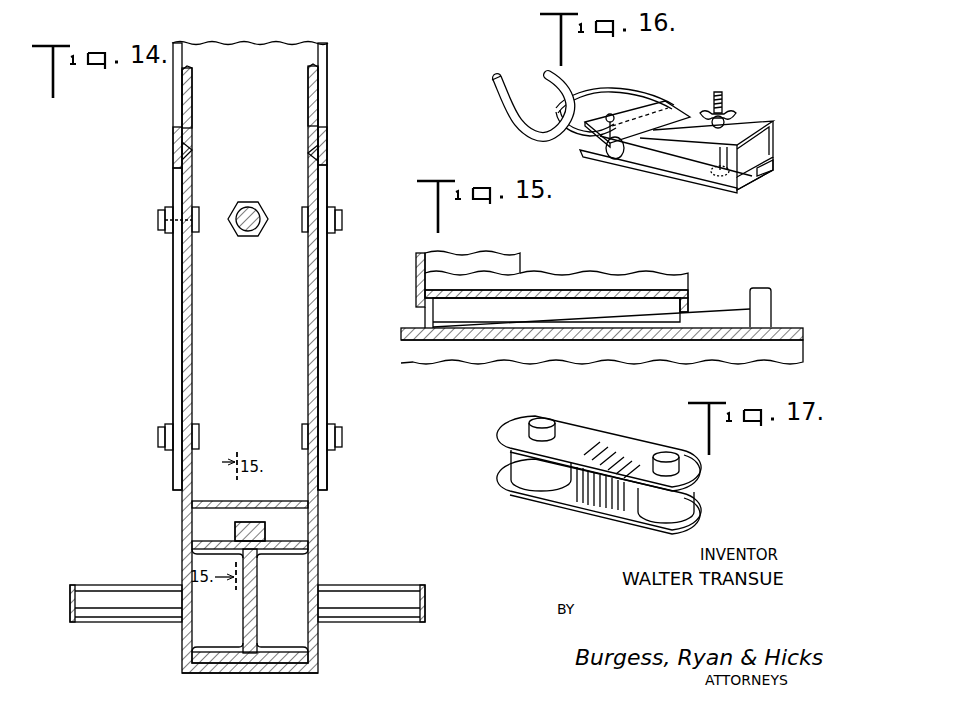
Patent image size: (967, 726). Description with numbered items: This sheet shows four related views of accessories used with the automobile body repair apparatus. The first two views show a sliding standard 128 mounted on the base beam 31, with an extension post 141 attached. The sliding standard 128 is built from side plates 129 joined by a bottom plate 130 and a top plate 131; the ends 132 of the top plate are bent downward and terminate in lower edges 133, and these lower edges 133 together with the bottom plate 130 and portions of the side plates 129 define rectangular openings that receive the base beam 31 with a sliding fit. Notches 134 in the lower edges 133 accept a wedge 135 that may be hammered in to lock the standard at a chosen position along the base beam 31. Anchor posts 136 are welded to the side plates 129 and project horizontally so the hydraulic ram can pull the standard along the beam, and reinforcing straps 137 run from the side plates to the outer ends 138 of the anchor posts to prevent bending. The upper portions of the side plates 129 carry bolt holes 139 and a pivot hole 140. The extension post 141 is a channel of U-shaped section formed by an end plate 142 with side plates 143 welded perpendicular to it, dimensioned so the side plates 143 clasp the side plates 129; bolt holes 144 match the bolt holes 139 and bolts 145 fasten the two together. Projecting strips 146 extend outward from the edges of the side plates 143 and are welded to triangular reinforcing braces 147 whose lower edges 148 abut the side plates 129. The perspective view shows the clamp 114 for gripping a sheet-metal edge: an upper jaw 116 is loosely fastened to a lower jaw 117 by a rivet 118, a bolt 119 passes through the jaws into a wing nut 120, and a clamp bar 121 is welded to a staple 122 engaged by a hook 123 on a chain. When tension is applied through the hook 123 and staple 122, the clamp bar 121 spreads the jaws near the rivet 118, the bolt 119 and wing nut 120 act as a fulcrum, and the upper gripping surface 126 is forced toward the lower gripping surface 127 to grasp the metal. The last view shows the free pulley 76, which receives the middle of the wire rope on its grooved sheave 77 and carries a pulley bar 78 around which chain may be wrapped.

In FIG. 14, the base beam 31 is at (282, 650).
In FIG. 15, the base beam 31 is at (795, 327).
In FIG. 17, the free pulley 76 is at (604, 432).
In FIG. 17, the grooved sheave 77 is at (537, 475).
In FIG. 17, the pulley bar 78 is at (692, 494).
In FIG. 16, the clamp 114 is at (667, 179).
In FIG. 16, the upper jaw 116 is at (752, 122).
In FIG. 16, the lower jaw 117 is at (714, 188).
In FIG. 16, the rivet 118 is at (588, 138).
In FIG. 16, the bolt 119 is at (708, 163).
In FIG. 16, the wing nut 120 is at (725, 115).
In FIG. 16, the clamp bar 121 is at (613, 158).
In FIG. 16, the staple 122 is at (610, 95).
In FIG. 14, the hook 123 is at (240, 240).
In FIG. 16, the hook 123 is at (518, 118).
In FIG. 16, the upper gripping surface 126 is at (768, 160).
In FIG. 16, the lower gripping surface 127 is at (758, 173).
In FIG. 14, the sliding standard 128 is at (182, 511).
In FIG. 15, the sliding standard 128 is at (624, 272).
In FIG. 14, the side plates 129 is at (181, 335).
In FIG. 15, the side plates 129 is at (648, 277).
In FIG. 14, the bottom plate 130 is at (310, 682).
In FIG. 14, the top plate 131 is at (224, 501).
In FIG. 15, the top plate 131 is at (558, 289).
In FIG. 15, the ends of the top plate 132 is at (450, 303).
In FIG. 14, the lower edges 133 is at (290, 550).
In FIG. 15, the lower edges 133 is at (418, 345).
In FIG. 14, the notches 134 is at (248, 522).
In FIG. 15, the notches 134 is at (692, 318).
In FIG. 14, the wedge 135 is at (268, 534).
In FIG. 15, the wedge 135 is at (764, 287).
In FIG. 14, the anchor posts 136 is at (136, 597).
In FIG. 14, the reinforcing straps 137 is at (70, 622).
In FIG. 14, the outer ends 138 is at (76, 600).
In FIG. 14, the bolt holes 139 is at (192, 206).
In FIG. 14, the pivot hole 140 is at (185, 262).
In FIG. 14, the extension post 141 is at (330, 60).
In FIG. 15, the extension post 141 is at (500, 252).
In FIG. 14, the end plate 142 is at (266, 49).
In FIG. 14, the side plates 143 is at (174, 121).
In FIG. 14, the bolt holes 144 is at (167, 232).
In FIG. 14, the bolts 145 is at (159, 220).
In FIG. 14, the projecting strips 146 is at (177, 153).
In FIG. 14, the triangular reinforcing braces 147 is at (181, 102).
In FIG. 14, the lower edges 148 is at (187, 150).